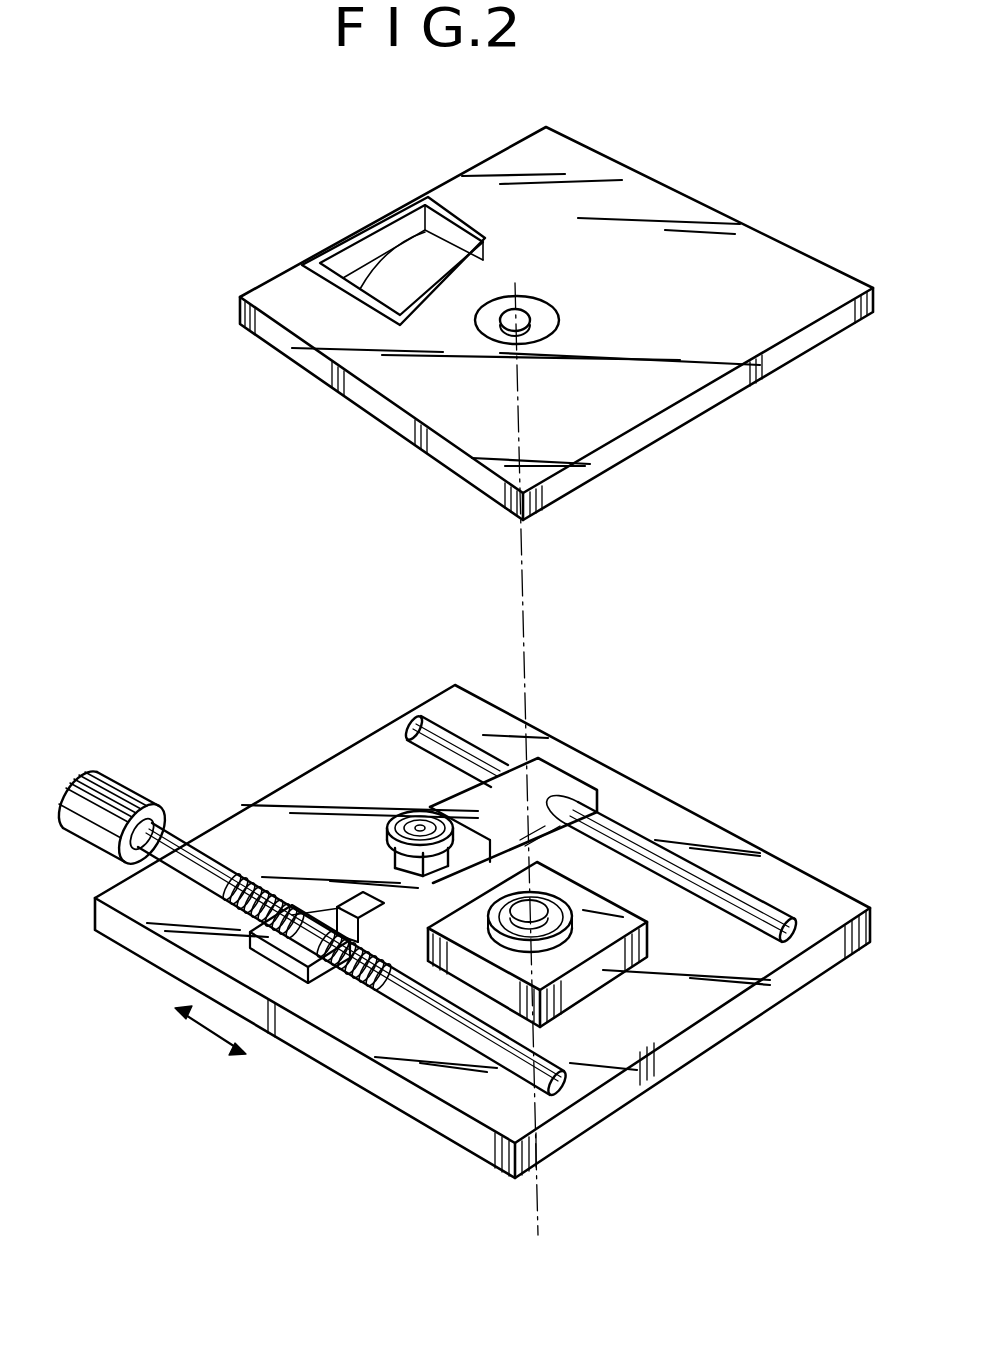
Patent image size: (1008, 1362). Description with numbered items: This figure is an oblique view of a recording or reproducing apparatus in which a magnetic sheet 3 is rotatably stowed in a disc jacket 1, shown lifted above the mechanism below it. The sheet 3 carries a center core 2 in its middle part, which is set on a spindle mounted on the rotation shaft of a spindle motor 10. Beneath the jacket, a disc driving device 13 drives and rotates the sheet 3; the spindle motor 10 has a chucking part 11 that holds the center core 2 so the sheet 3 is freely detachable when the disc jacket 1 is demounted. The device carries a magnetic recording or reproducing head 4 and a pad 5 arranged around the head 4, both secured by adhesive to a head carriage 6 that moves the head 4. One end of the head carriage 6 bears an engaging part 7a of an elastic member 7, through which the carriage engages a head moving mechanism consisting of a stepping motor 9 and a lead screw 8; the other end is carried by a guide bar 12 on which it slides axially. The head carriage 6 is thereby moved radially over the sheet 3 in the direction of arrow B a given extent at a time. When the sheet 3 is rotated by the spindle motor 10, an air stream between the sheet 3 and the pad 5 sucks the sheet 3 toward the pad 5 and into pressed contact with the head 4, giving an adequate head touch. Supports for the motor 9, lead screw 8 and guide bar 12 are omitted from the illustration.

The disc jacket 1 is at (602, 432).
The center core 2 is at (527, 318).
The magnetic sheet 3 is at (443, 250).
The magnetic recording or reproducing head 4 is at (420, 826).
The pad 5 is at (398, 816).
The head carriage 6 is at (545, 786).
The elastic member 7 is at (345, 967).
The engaging part 7a is at (292, 940).
The lead screw 8 is at (535, 1064).
The stepping motor 9 is at (128, 795).
The spindle motor 10 is at (605, 975).
The chucking part 11 is at (540, 905).
The guide bar 12 is at (767, 922).
The disc driving device 13 is at (148, 1032).